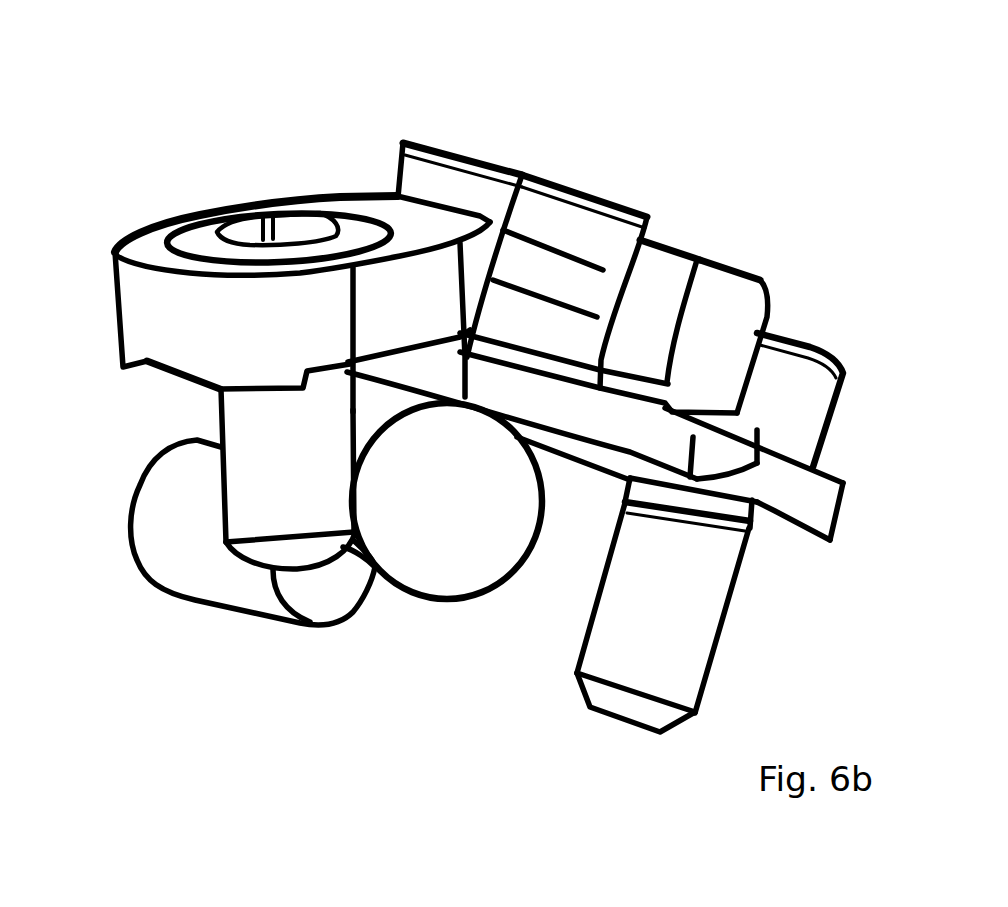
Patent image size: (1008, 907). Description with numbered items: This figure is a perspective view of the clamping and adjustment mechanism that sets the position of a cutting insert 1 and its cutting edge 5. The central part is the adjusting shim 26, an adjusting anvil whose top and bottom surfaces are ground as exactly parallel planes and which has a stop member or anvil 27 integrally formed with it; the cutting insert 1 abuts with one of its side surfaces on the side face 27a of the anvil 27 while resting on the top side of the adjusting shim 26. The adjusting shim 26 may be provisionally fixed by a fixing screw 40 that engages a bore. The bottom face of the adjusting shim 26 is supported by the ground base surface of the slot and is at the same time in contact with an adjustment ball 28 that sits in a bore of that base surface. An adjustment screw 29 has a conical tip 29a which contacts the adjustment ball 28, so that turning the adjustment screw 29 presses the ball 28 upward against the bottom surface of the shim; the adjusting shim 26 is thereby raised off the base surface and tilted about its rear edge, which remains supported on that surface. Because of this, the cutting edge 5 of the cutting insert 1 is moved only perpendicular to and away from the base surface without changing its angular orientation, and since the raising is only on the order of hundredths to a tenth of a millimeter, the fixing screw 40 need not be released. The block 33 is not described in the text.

The cutting insert 1 is at (581, 222).
The cutting edge 5 is at (470, 150).
The adjusting shim 26 is at (563, 410).
The stop member or anvil 27 is at (717, 297).
The side face of the anvil 27a is at (650, 290).
The adjustment ball 28 is at (447, 537).
The adjustment screw 29 is at (240, 585).
The conical tip of adjustment screw 29a is at (345, 577).
The bearing block 33 is at (258, 328).
The fixing screw 40 is at (717, 573).